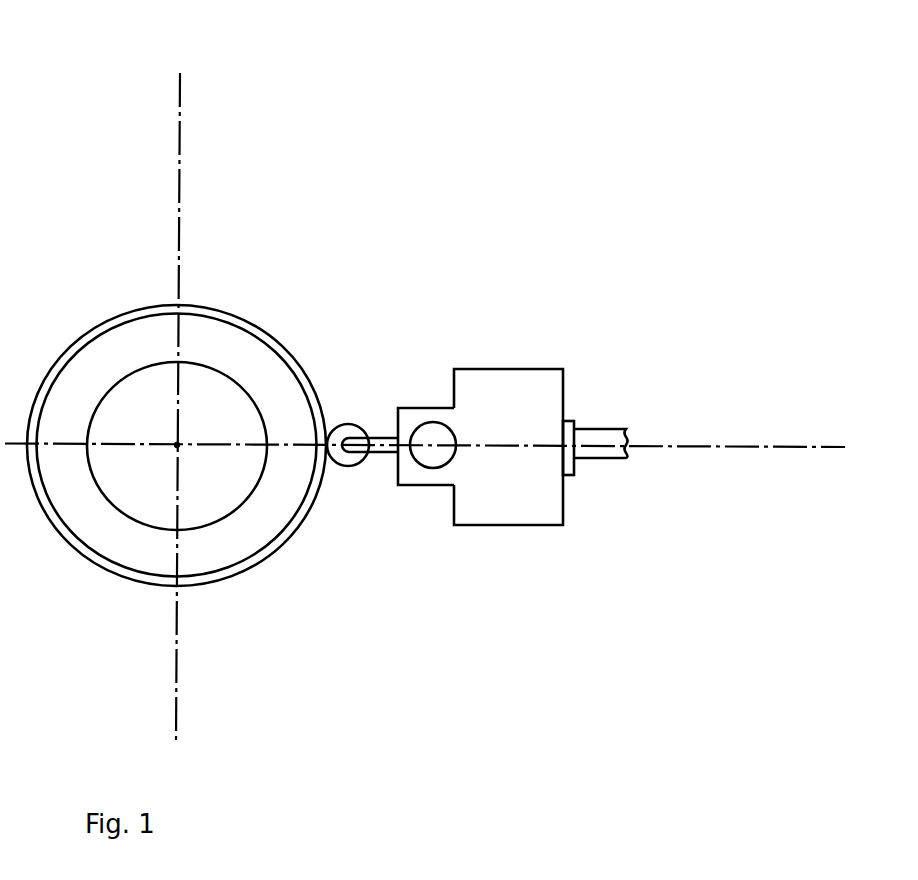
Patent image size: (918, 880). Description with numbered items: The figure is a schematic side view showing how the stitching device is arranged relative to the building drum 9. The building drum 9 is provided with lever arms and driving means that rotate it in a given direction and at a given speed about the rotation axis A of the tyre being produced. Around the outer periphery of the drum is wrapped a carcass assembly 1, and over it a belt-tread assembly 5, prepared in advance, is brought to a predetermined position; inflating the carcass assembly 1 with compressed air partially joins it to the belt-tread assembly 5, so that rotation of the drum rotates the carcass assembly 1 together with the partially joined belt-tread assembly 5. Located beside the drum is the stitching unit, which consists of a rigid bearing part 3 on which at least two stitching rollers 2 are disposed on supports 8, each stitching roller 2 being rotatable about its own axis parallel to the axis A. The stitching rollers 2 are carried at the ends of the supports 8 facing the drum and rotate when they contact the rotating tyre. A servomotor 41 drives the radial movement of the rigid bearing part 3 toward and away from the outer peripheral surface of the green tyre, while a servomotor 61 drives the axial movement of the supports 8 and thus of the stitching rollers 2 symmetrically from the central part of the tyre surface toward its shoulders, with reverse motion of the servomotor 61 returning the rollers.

The rotation axis A is at (126, 406).
The carcass assembly 1 is at (191, 339).
The building drum 9 is at (243, 315).
The belt-tread assembly 5 is at (239, 343).
The stitching roller 2 is at (421, 283).
The support 8 is at (370, 559).
The rigid bearing part 3 is at (512, 313).
The servomotor 61 is at (432, 551).
The servomotor 41 is at (677, 288).